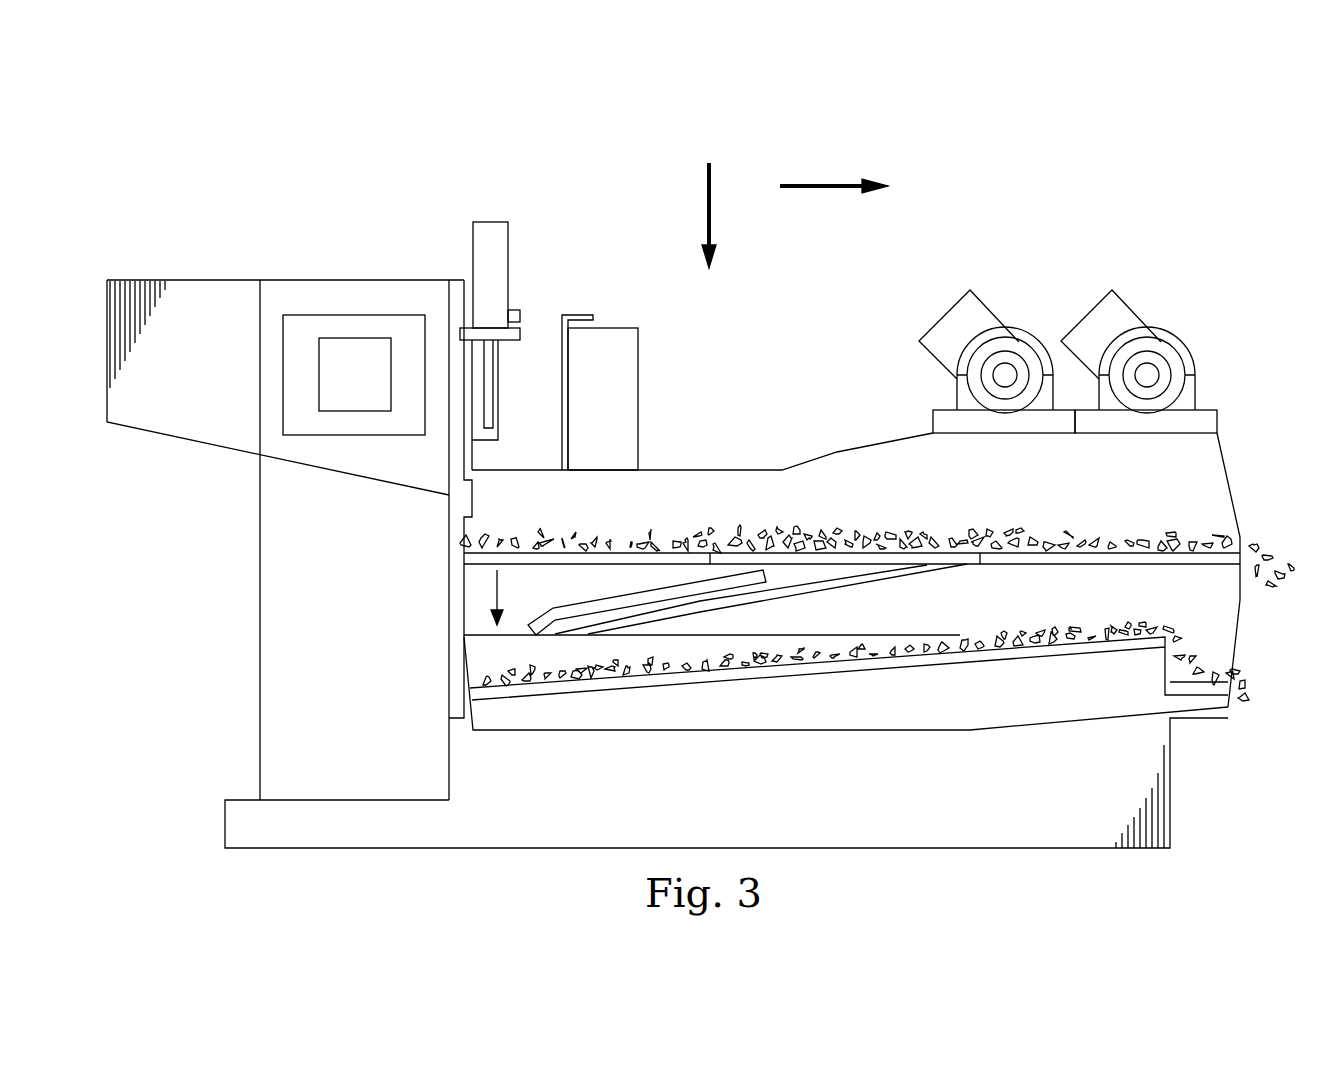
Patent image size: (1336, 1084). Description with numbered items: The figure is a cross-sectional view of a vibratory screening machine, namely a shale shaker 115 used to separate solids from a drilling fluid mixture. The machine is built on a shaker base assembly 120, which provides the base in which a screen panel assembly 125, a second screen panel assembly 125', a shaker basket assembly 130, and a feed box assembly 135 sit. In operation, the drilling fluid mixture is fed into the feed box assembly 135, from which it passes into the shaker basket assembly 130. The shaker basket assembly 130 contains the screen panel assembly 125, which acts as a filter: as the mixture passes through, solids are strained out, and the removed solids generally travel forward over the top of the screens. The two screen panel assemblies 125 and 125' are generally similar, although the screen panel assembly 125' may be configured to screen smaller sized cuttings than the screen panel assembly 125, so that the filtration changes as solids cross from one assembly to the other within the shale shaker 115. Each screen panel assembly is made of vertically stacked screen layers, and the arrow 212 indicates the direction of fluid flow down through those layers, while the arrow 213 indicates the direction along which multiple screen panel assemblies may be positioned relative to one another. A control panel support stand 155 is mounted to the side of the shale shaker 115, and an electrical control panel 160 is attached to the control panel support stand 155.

The shale shaker 115 is at (460, 127).
The shaker base assembly 120 is at (474, 873).
The screen panel assembly 125 is at (877, 541).
The screen panel assembly 125' is at (808, 661).
The shaker basket assembly 130 is at (855, 355).
The feed box assembly 135 is at (183, 260).
The control panel support stand 155 is at (350, 461).
The electrical control panel 160 is at (378, 386).
The arrow 212 is at (707, 202).
The arrow 213 is at (820, 182).